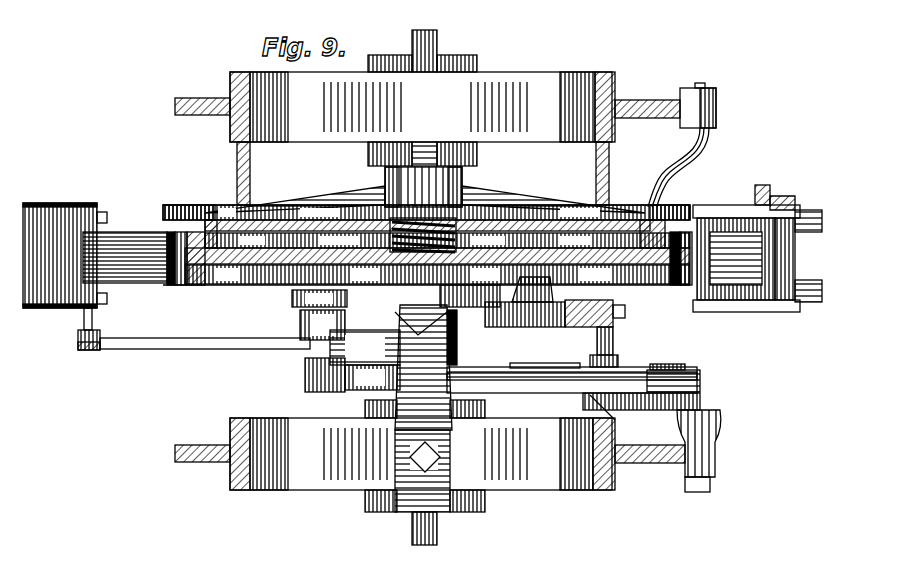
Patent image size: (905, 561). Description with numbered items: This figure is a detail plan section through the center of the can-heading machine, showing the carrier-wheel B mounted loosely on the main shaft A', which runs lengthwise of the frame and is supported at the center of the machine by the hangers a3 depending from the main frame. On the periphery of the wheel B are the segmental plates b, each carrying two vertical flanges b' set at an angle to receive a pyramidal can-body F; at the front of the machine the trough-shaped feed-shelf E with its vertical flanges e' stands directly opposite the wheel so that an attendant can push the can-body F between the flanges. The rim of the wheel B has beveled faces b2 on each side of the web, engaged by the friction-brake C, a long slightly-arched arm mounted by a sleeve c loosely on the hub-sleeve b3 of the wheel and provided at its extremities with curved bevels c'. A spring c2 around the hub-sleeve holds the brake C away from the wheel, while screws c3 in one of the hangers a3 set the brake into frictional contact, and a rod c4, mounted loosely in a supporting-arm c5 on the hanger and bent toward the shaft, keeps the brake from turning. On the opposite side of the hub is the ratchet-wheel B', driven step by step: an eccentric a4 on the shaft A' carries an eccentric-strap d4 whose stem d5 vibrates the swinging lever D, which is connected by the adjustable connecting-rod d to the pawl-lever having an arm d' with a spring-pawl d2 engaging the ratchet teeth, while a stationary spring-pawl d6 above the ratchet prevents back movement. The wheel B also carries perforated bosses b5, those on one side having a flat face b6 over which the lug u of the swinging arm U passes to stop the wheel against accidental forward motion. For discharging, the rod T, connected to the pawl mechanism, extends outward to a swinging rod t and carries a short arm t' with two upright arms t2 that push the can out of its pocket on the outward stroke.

The hangers a3 is at (562, 80).
The eccentric a4 is at (368, 388).
The shaft A' is at (425, 472).
The segmental plates b is at (454, 241).
The vertical flanges b' is at (413, 257).
The beveled faces b2 is at (662, 288).
The hub-sleeve b3 is at (478, 174).
The bosses b5 is at (244, 298).
The flat face b6 is at (222, 287).
The wheel B is at (425, 283).
The ratchet-wheel B' is at (426, 367).
The sleeve c is at (422, 118).
The curved bevels c' is at (426, 196).
The spring c2 is at (388, 212).
The screws c3 is at (251, 160).
The rod c4 is at (708, 166).
The supporting-arm c5 is at (718, 110).
The friction-brake C is at (285, 212).
The connecting-rod d is at (307, 377).
The arm d' is at (343, 351).
The spring-pawl d2 is at (292, 300).
The eccentric-strap d4 is at (598, 398).
The stem or arm d5 is at (668, 366).
The stationary spring-pawl d6 is at (462, 322).
The swinging lever D is at (700, 400).
The vertical flanges e' is at (746, 259).
The shelf or table E is at (798, 256).
The can-body F is at (770, 310).
The swinging rod t is at (85, 360).
The short arm t' is at (69, 327).
The short upright arms t2 is at (104, 214).
The rod T is at (135, 350).
The flange or lug u is at (556, 290).
The swinging arm U is at (558, 329).